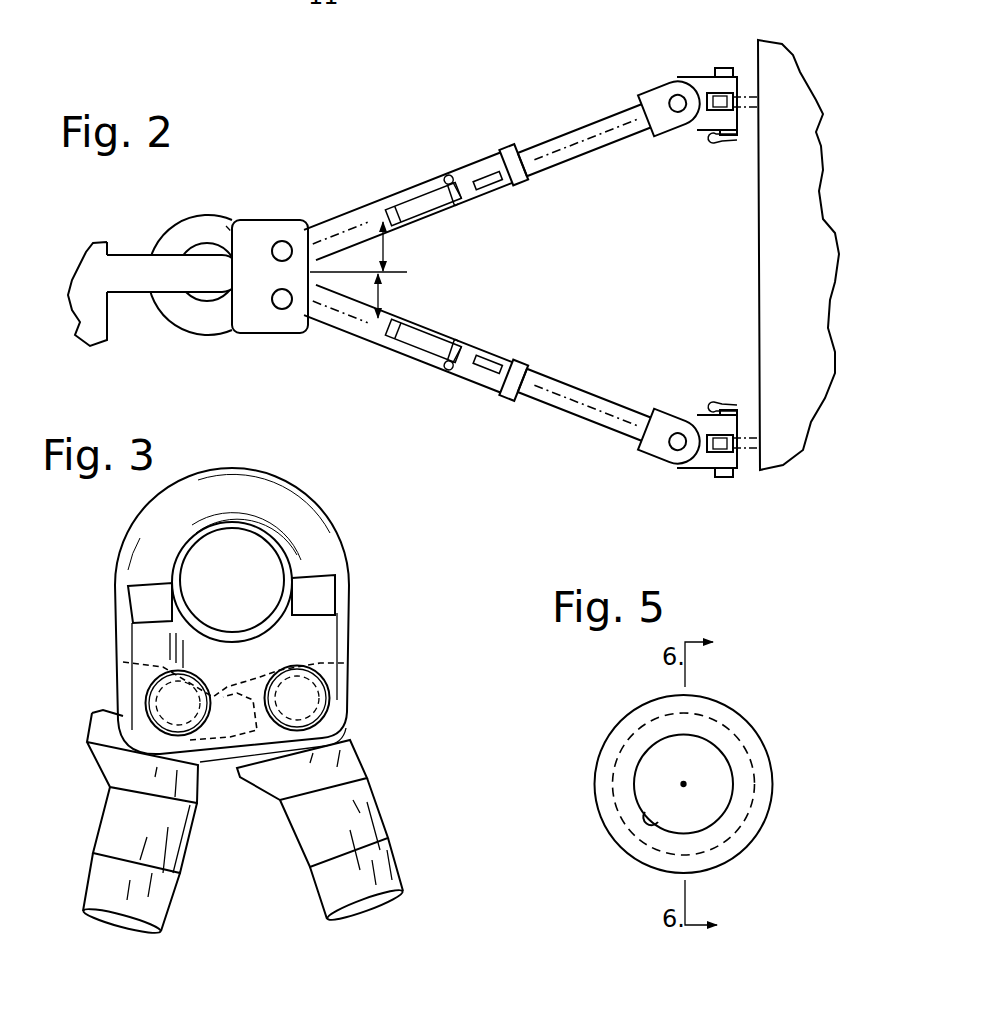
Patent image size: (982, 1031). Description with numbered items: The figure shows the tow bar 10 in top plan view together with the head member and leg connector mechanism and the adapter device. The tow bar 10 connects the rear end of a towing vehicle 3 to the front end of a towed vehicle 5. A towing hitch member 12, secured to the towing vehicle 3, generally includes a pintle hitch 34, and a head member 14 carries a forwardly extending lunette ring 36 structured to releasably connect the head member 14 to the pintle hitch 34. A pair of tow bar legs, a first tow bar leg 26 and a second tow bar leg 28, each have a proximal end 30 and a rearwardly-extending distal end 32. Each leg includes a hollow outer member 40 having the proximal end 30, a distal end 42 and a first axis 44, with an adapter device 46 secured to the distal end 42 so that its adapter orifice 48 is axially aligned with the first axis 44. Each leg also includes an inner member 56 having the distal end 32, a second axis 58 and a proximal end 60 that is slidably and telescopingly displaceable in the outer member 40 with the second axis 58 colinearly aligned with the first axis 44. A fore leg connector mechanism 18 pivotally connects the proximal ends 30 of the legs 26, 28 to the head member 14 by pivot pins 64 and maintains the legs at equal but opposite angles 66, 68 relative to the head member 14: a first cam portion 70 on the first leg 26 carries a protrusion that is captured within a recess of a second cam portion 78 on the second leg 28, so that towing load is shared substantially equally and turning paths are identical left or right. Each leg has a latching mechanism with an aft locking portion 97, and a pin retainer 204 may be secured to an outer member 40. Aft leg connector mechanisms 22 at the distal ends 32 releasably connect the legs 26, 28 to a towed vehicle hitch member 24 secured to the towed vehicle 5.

In FIG. 2, the towing vehicle 3 is at (85, 300).
In FIG. 2, the towed vehicle 5 is at (806, 258).
In FIG. 2, the tow bar 10 is at (253, 128).
In FIG. 3, the tow bar 10 is at (358, 522).
In FIG. 5, the tow bar 10 is at (803, 658).
In FIG. 2, the towing hitch member 12 is at (124, 240).
In FIG. 2, the head member 14 is at (247, 352).
In FIG. 3, the head member 14 is at (98, 623).
In FIG. 2, the fore leg connector mechanism 18 is at (252, 207).
In FIG. 3, the fore leg connector mechanism 18 is at (400, 678).
In FIG. 2, the aft leg connector mechanisms 22 is at (703, 165).
In FIG. 2, the towed vehicle hitch member 24 is at (748, 68).
In FIG. 2, the first tow bar leg 26 is at (540, 410).
In FIG. 3, the first tow bar leg 26 is at (158, 908).
In FIG. 2, the second tow bar leg 28 is at (577, 130).
In FIG. 3, the second tow bar leg 28 is at (392, 883).
In FIG. 2, the proximal end 30 is at (313, 226).
In FIG. 3, the proximal end 30 is at (103, 882).
In FIG. 2, the distal end 32 is at (640, 128).
In FIG. 2, the pintle hitch 34 is at (130, 283).
In FIG. 2, the lunette ring 36 is at (178, 233).
In FIG. 3, the lunette ring 36 is at (147, 528).
In FIG. 2, the hollow outer member 40 is at (435, 180).
In FIG. 2, the distal end of outer member 42 is at (493, 162).
In FIG. 2, the first axis 44 is at (365, 223).
In FIG. 5, the first axis 44 is at (684, 784).
In FIG. 2, the adapter device 46 is at (522, 182).
In FIG. 5, the adapter device 46 is at (747, 720).
In FIG. 5, the adapter orifice 48 is at (650, 820).
In FIG. 2, the inner member 56 is at (577, 150).
In FIG. 2, the second axis 58 is at (610, 128).
In FIG. 2, the proximal end of inner member 60 is at (522, 157).
In FIG. 3, the pivot pins 64 is at (168, 708).
In FIG. 2, the angle 66 is at (385, 250).
In FIG. 2, the angle 68 is at (380, 302).
In FIG. 3, the first cam portion 70 is at (108, 767).
In FIG. 3, the second cam portion 78 is at (343, 757).
In FIG. 2, the aft locking portion 97 is at (473, 168).
In FIG. 2, the pin retainer 204 is at (428, 342).